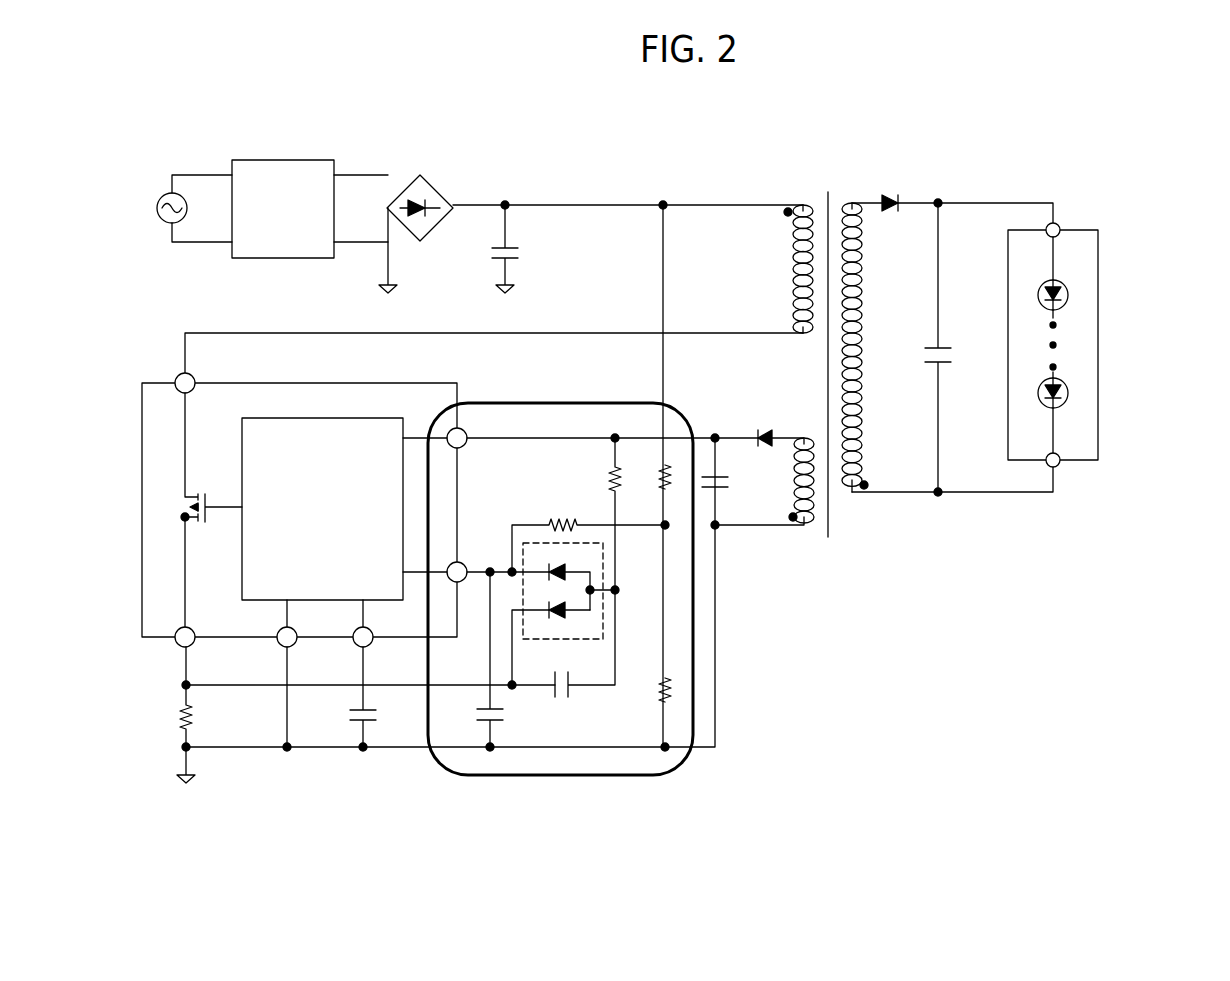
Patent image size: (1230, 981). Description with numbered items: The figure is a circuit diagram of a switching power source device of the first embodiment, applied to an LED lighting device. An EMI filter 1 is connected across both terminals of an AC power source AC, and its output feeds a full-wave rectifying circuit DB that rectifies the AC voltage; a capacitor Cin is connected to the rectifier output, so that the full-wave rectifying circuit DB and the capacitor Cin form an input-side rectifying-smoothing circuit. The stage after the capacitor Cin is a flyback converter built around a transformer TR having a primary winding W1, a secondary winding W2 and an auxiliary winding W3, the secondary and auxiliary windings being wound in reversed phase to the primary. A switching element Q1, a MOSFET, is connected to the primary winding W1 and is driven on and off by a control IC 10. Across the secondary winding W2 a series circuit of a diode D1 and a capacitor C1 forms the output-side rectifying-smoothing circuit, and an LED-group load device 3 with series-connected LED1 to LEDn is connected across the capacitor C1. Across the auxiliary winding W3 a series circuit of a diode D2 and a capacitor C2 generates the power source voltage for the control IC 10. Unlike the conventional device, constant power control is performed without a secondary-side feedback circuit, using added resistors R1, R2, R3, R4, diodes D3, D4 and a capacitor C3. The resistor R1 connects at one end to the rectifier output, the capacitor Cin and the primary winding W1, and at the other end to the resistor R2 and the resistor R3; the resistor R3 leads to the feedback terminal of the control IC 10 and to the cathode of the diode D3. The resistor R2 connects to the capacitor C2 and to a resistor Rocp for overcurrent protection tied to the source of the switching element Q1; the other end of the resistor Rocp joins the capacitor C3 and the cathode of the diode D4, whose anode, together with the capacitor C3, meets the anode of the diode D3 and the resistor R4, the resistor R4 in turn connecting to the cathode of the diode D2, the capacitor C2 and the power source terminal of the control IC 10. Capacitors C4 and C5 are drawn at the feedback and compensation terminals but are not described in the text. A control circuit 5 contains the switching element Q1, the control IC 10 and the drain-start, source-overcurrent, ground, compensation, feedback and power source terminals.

The EMI filter 1 is at (288, 160).
The LED-group load device 3 is at (1099, 345).
The control circuit 5 is at (142, 460).
The control integrated circuit 10 is at (365, 418).
The AC power source AC is at (177, 208).
The full-wave rectifying circuit DB is at (421, 224).
The capacitor Cin is at (527, 249).
The transformer TR is at (829, 349).
The primary winding W1 is at (785, 269).
The secondary winding W2 is at (871, 347).
The auxiliary winding W3 is at (786, 480).
The diode D1 is at (890, 219).
The capacitor C1 is at (927, 347).
The LED LED1 is at (1068, 295).
The LED LEDn is at (1068, 393).
The switching element Q1 is at (196, 510).
The resistor R1 is at (649, 497).
The resistor R2 is at (649, 714).
The resistor R3 is at (588, 532).
The resistor R4 is at (599, 516).
The diode D2 is at (759, 423).
The diode D3 is at (573, 576).
The diode D4 is at (554, 643).
The capacitor C2 is at (753, 503).
The capacitor C3 is at (585, 661).
The feedback capacitor C4 is at (506, 661).
The compensation capacitor C5 is at (379, 699).
The resistor for overcurrent protection Rocp is at (159, 715).